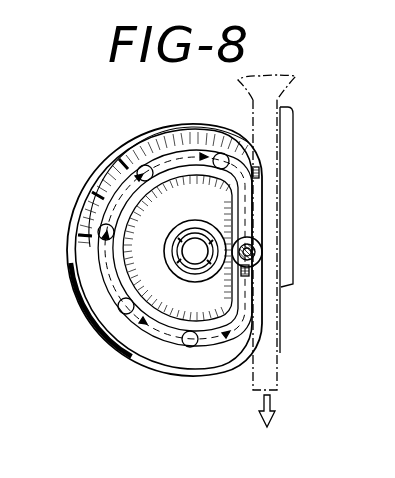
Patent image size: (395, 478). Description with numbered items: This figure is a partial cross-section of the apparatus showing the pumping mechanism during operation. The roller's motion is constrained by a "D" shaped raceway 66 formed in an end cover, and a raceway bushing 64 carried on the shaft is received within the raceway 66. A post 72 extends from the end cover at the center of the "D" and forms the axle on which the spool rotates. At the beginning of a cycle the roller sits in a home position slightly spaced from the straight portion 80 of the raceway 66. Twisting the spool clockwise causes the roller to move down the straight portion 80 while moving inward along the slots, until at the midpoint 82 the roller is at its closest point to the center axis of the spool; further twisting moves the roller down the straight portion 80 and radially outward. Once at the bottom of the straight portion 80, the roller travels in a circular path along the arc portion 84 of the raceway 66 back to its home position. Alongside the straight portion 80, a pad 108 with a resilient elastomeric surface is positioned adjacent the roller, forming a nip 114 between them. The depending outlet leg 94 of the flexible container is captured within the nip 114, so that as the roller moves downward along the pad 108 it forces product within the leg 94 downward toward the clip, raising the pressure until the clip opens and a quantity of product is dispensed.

The raceway 66 is at (80, 216).
The post 72 is at (166, 251).
The arc portion 84 is at (112, 304).
The raceway bushing 64 is at (263, 249).
The midpoint 82 is at (262, 258).
The nip 114 is at (262, 243).
The straight portion 80 is at (250, 183).
The pad 108 is at (284, 138).
The outlet leg 94 is at (272, 372).